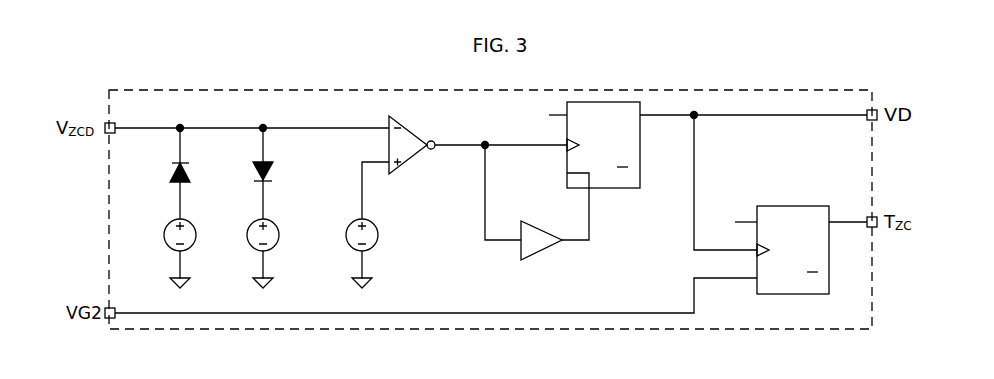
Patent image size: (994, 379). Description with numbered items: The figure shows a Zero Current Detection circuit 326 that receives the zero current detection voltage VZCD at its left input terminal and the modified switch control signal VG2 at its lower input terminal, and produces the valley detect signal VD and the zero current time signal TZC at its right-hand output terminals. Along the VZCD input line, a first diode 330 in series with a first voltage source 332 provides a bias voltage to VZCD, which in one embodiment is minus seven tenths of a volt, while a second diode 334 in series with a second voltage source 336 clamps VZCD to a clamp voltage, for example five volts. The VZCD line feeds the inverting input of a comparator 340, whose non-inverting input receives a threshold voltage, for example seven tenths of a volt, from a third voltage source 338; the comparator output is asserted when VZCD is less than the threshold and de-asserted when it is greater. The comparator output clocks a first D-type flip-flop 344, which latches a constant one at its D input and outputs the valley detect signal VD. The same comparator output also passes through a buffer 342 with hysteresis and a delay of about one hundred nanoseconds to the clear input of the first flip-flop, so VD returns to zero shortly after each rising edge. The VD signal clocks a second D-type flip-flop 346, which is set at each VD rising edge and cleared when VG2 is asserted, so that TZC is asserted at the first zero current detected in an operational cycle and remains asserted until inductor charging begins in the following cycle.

The Zero Current Detection (ZCD) circuit 326 is at (752, 90).
The first diode 330 is at (186, 170).
The first voltage source 332 is at (190, 247).
The second diode 334 is at (270, 172).
The second voltage source 336 is at (273, 247).
The third voltage source 338 is at (372, 247).
The comparator 340 is at (410, 164).
The buffer 342 is at (535, 224).
The first D-type flip-flop 344 is at (567, 173).
The second D-type flip-flop 346 is at (793, 206).